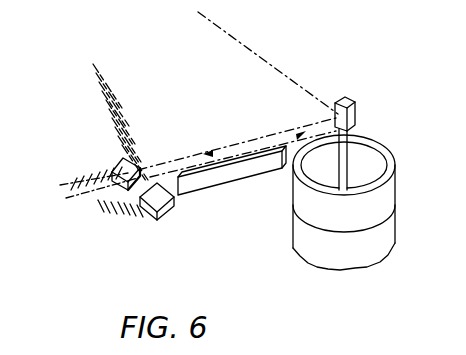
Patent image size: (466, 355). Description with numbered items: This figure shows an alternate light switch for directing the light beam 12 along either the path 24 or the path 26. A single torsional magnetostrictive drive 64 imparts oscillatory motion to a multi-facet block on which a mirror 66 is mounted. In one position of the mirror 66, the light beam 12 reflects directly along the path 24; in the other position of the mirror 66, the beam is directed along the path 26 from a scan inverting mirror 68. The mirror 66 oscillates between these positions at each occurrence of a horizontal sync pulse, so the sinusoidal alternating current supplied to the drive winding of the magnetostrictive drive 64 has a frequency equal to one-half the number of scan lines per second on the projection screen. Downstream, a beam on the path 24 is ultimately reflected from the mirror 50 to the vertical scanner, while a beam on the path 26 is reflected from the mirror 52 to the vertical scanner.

The light beam 12 is at (232, 34).
The path 24 is at (66, 196).
The path 26 is at (68, 183).
The mirror 50 is at (140, 166).
The mirror 52 is at (173, 210).
The torsional magnetostrictive drive 64 is at (400, 191).
The mirror 66 is at (345, 96).
The scan inverting mirror 68 is at (210, 182).